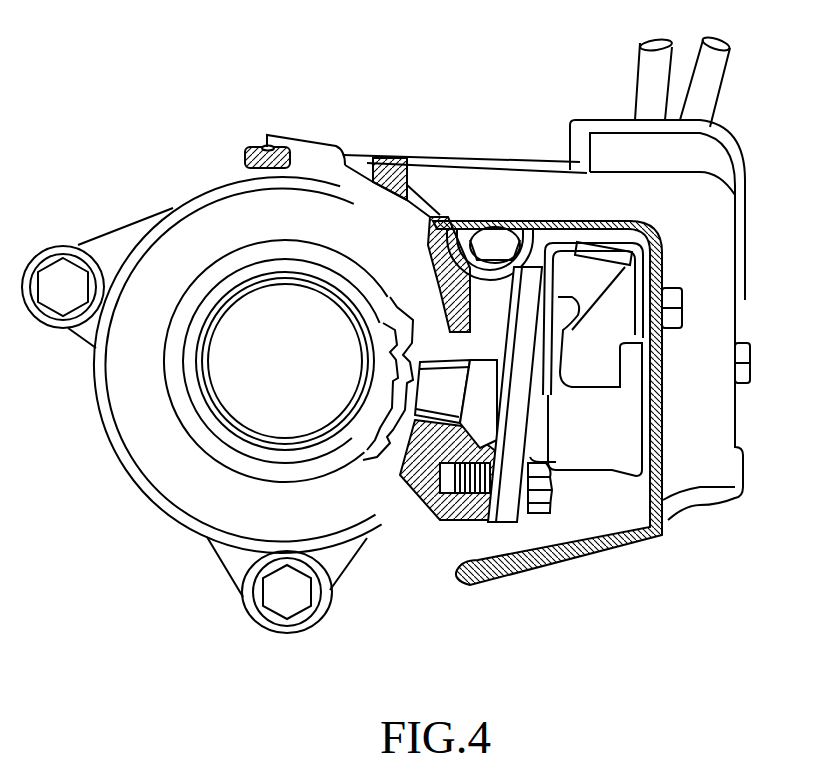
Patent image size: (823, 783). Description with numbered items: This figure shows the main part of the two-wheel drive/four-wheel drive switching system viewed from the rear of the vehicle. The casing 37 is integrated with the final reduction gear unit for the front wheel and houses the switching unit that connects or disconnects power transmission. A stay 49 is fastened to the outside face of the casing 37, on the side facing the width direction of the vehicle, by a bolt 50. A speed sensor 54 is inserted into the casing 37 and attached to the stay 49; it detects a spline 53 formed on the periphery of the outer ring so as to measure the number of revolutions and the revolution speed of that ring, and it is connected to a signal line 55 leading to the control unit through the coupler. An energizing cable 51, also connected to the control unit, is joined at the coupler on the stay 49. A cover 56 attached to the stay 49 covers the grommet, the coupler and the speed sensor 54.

The casing 37 is at (190, 490).
The stay 49 is at (563, 293).
The bolt 50 is at (552, 490).
The energizing cable 51 is at (705, 88).
The spline 53 is at (380, 453).
The speed sensor 54 is at (435, 382).
The signal line 55 is at (645, 77).
The cover 56 is at (690, 480).